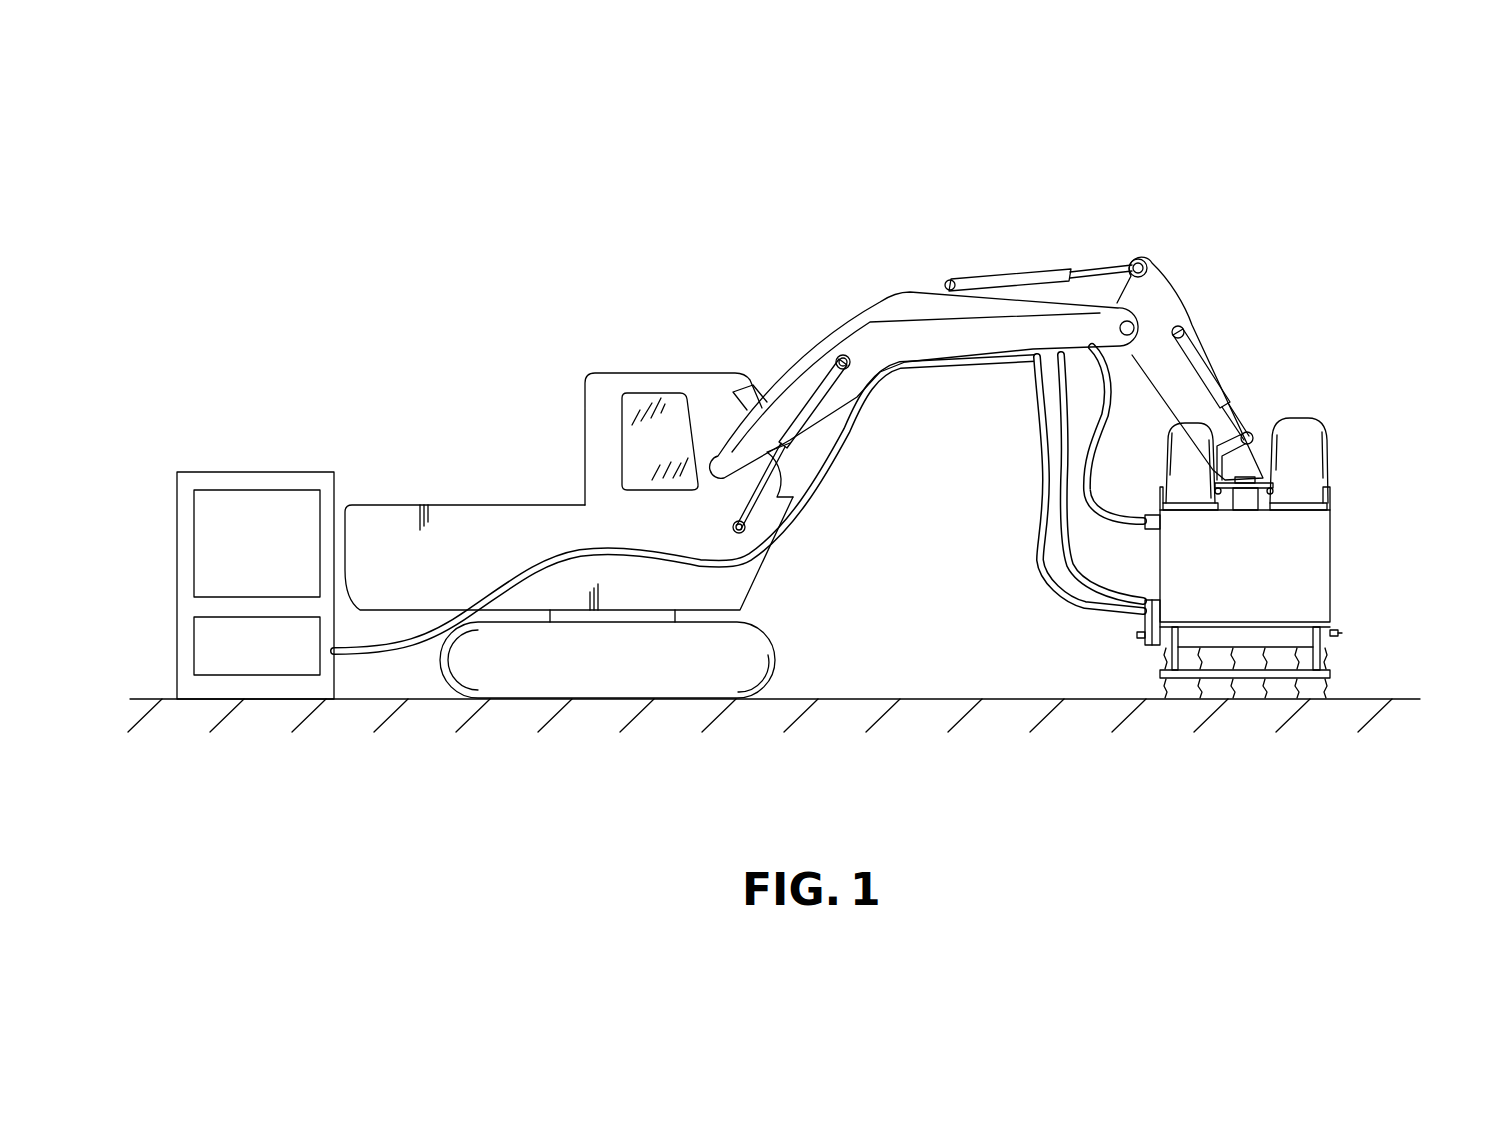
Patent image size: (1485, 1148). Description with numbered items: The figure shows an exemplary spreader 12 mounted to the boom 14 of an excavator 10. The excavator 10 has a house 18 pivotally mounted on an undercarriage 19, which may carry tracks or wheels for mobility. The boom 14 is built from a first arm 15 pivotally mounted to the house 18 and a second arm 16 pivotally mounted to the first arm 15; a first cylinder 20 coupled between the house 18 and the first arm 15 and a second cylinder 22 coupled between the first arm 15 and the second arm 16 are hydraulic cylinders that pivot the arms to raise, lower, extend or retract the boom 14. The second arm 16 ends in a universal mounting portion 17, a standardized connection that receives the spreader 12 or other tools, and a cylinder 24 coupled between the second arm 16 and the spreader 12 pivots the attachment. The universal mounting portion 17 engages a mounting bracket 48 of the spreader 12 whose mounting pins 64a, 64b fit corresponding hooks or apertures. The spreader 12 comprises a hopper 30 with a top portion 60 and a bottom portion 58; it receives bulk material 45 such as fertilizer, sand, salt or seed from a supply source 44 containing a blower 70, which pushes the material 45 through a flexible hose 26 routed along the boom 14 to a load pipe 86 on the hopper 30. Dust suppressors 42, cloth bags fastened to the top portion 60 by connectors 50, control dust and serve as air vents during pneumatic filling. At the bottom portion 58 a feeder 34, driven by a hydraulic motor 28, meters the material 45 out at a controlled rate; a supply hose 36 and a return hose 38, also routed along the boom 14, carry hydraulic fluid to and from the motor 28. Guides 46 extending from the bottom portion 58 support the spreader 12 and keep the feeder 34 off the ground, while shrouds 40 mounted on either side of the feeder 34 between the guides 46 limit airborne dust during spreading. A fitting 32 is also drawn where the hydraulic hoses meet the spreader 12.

The excavator 10 is at (590, 330).
The spreader 12 is at (1322, 396).
The boom 14 is at (1015, 230).
The first arm 15 is at (838, 346).
The second arm 16 is at (1158, 287).
The universal mounting portion 17 is at (1254, 426).
The house 18 is at (592, 400).
The undercarriage 19 is at (765, 652).
The first cylinder 20 is at (757, 507).
The second cylinder 22 is at (978, 283).
The cylinder 24 is at (1185, 343).
The hose 26 is at (838, 460).
The motor 28 is at (1160, 603).
The hopper 30 is at (1322, 608).
The hose fitting 32 is at (1143, 631).
The feeder 34 is at (1257, 633).
The supply hose 36 is at (1060, 395).
The return hose 38 is at (1042, 442).
The shrouds 40 is at (1185, 688).
The dust suppressors 42 is at (1185, 455).
The supply source 44 is at (236, 472).
The material 45 is at (310, 503).
The guides 46 is at (1160, 673).
The mounting bracket 48 is at (1225, 505).
The connectors 50 is at (1318, 505).
The bottom portion 58 is at (1345, 650).
The top portion 60 is at (1358, 492).
The mounting pin 64a is at (1220, 494).
The mounting pin 64b is at (1272, 494).
The blower 70 is at (322, 657).
The load pipe 86 is at (1147, 527).